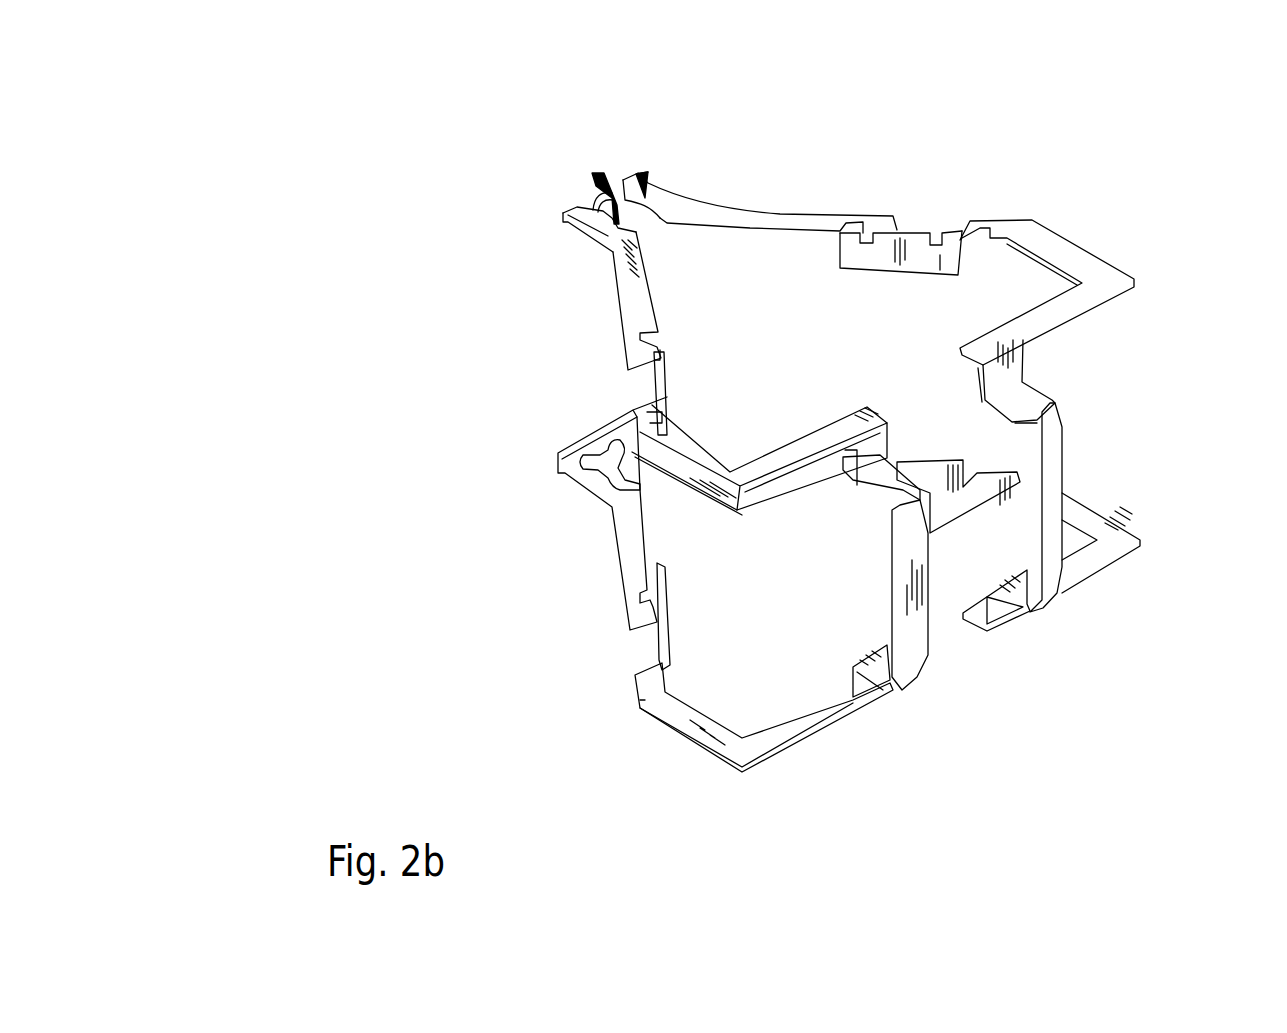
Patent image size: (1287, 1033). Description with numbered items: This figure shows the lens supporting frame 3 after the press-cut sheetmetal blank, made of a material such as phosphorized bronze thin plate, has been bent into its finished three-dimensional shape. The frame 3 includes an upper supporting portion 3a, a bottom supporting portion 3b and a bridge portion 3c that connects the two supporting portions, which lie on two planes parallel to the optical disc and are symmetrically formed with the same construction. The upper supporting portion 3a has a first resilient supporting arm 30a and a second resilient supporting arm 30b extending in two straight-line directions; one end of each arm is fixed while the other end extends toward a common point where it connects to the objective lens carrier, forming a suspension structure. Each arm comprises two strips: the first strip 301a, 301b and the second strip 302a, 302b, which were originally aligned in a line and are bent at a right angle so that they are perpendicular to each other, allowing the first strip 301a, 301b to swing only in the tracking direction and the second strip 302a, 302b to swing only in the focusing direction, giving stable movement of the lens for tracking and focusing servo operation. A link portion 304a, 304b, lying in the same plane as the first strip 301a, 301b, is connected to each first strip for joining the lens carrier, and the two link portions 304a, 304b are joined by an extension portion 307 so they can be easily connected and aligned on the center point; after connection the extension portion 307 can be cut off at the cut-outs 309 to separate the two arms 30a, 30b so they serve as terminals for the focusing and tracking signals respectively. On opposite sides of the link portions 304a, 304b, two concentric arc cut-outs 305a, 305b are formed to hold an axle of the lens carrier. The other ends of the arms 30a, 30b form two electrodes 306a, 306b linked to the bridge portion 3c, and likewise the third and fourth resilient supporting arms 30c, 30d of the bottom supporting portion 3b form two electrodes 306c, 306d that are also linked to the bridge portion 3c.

The lens supporting frame 3 is at (458, 330).
The upper supporting portion 3a is at (920, 152).
The bottom supporting portion 3b is at (680, 797).
The bridge portion 3c is at (1043, 503).
The first resilient supporting arm 30a is at (906, 212).
The second resilient supporting arm 30b is at (598, 295).
The third resilient supporting arm 30c is at (943, 432).
The fourth resilient supporting arm 30d is at (814, 737).
The first strip 301a is at (781, 212).
The first strip 301b is at (630, 313).
The second strip 302a is at (892, 265).
The second strip 302b is at (668, 383).
The link portion 304a is at (652, 175).
The link portion 304b is at (585, 225).
The arc cut-out 305a is at (620, 180).
The arc cut-out 305b is at (592, 200).
The electrode 306a is at (1053, 403).
The electrode 306b is at (890, 485).
The electrode 306c is at (1043, 582).
The electrode 306d is at (923, 655).
The extension portion 307 is at (560, 236).
The cut-outs 309 is at (595, 172).